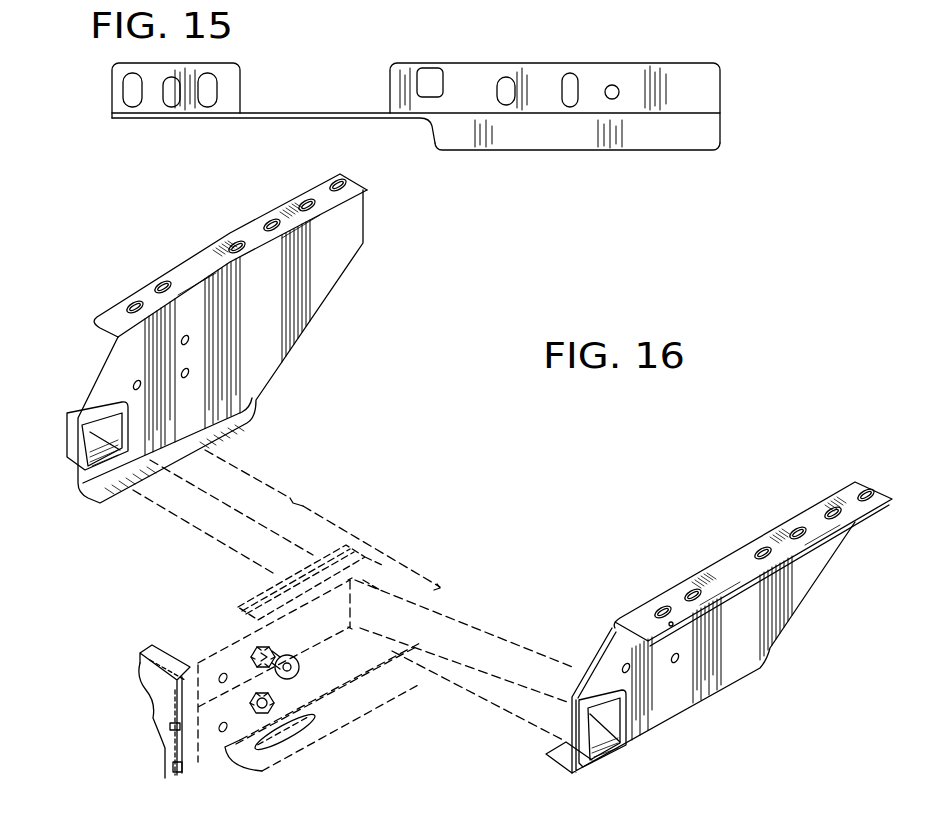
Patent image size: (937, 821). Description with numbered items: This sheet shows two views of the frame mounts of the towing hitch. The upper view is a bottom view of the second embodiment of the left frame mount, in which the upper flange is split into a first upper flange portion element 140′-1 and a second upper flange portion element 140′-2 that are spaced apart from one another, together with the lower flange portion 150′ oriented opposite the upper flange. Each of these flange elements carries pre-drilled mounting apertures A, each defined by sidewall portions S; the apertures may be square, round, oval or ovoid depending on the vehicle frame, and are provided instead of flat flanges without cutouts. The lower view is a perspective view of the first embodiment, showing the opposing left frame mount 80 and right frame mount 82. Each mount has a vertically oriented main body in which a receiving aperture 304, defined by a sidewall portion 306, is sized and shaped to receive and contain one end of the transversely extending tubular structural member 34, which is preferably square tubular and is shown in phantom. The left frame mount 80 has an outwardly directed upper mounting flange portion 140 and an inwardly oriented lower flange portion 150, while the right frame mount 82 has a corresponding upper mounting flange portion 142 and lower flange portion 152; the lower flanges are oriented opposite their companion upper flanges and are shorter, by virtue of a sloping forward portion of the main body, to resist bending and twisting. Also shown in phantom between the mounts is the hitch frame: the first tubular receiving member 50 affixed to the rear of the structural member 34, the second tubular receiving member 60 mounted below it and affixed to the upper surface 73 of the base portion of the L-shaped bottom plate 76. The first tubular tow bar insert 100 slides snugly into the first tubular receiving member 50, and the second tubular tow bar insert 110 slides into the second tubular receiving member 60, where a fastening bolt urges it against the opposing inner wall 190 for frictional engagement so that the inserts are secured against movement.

In FIG. 15, the second upper flange portion element 140′-2 is at (240, 72).
In FIG. 15, the first upper flange portion element 140′-1 is at (632, 63).
In FIG. 15, the lower flange portion 150′ is at (655, 137).
In FIG. 15, the mounting apertures A is at (133, 108).
In FIG. 16, the mounting apertures A is at (663, 612).
In FIG. 15, the sidewall portions S is at (346, 186).
In FIG. 16, the sidewall portions S is at (866, 492).
In FIG. 15, the upper mounting flange portion 140 is at (93, 318).
In FIG. 15, the left frame mount 80 is at (110, 362).
In FIG. 15, the receiving aperture 304 is at (97, 413).
In FIG. 16, the receiving aperture 304 is at (598, 707).
In FIG. 15, the sidewall portion 306 is at (100, 463).
In FIG. 16, the sidewall portion 306 is at (603, 749).
In FIG. 15, the lower flange portion 150 is at (100, 496).
In FIG. 15, the transversely extending tubular structural member 34 is at (458, 600).
In FIG. 15, the first tubular receiving member 50 is at (203, 622).
In FIG. 15, the first tubular tow bar insert 100 is at (140, 670).
In FIG. 15, the opposing inner wall 190 is at (177, 742).
In FIG. 15, the second tubular tow bar insert 110 is at (173, 763).
In FIG. 15, the second tubular receiving member 60 is at (213, 753).
In FIG. 15, the upper surface 73 is at (388, 682).
In FIG. 15, the bottom plate 76 is at (352, 727).
In FIG. 16, the upper mounting flange portion 142 is at (745, 577).
In FIG. 16, the right frame mount 82 is at (808, 590).
In FIG. 16, the lower flange portion 152 is at (558, 757).